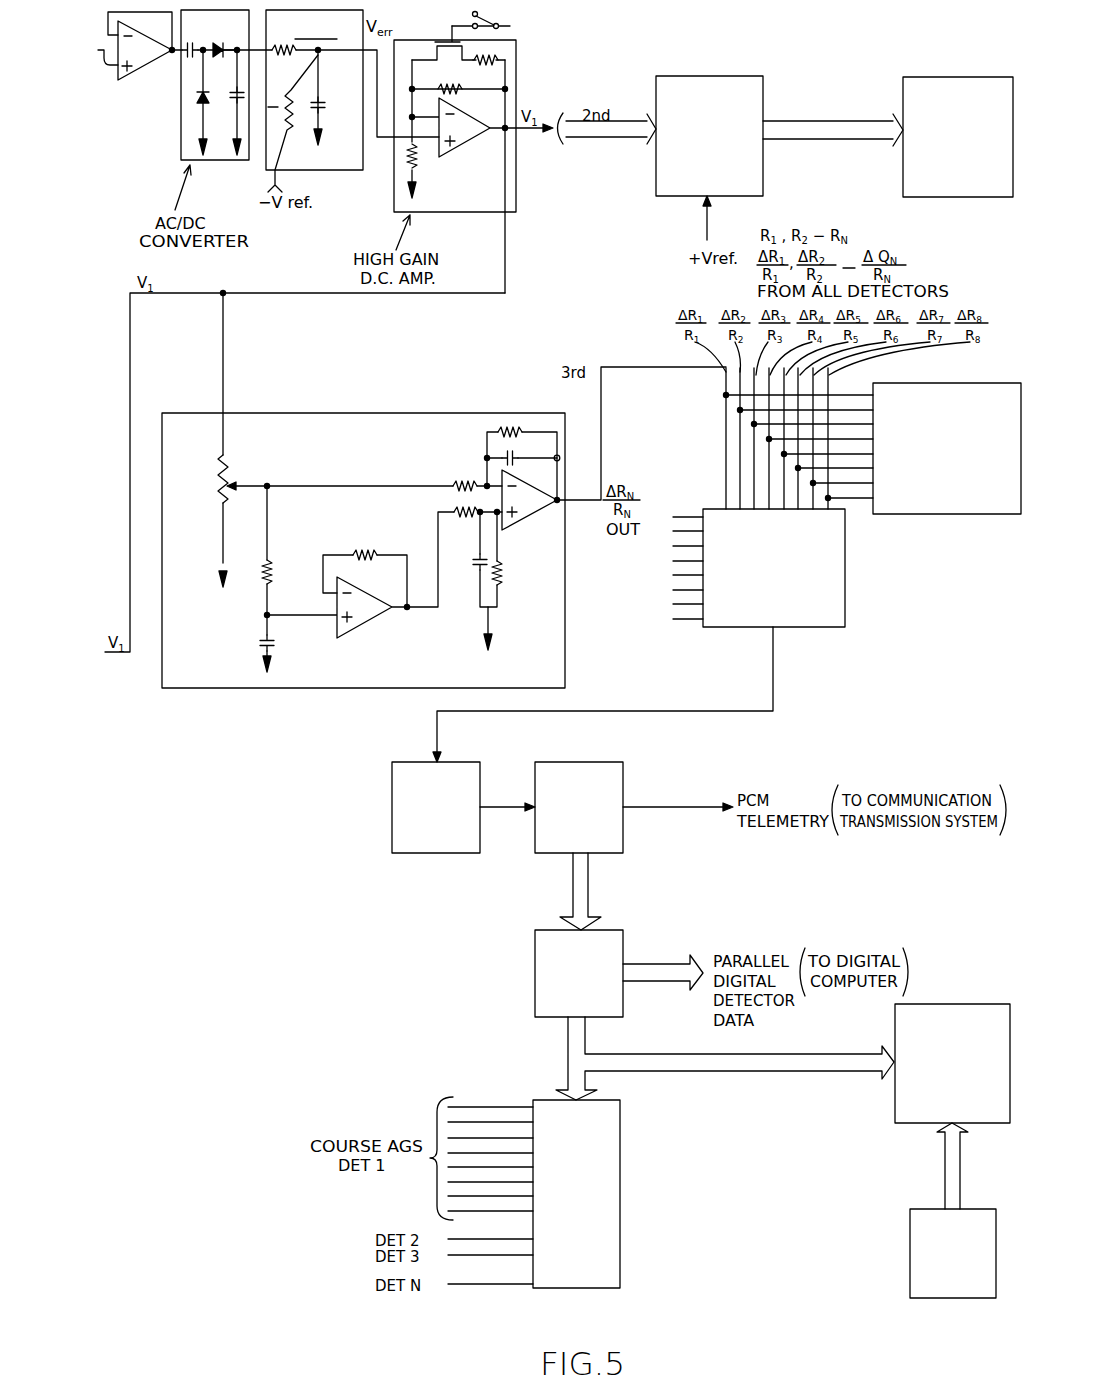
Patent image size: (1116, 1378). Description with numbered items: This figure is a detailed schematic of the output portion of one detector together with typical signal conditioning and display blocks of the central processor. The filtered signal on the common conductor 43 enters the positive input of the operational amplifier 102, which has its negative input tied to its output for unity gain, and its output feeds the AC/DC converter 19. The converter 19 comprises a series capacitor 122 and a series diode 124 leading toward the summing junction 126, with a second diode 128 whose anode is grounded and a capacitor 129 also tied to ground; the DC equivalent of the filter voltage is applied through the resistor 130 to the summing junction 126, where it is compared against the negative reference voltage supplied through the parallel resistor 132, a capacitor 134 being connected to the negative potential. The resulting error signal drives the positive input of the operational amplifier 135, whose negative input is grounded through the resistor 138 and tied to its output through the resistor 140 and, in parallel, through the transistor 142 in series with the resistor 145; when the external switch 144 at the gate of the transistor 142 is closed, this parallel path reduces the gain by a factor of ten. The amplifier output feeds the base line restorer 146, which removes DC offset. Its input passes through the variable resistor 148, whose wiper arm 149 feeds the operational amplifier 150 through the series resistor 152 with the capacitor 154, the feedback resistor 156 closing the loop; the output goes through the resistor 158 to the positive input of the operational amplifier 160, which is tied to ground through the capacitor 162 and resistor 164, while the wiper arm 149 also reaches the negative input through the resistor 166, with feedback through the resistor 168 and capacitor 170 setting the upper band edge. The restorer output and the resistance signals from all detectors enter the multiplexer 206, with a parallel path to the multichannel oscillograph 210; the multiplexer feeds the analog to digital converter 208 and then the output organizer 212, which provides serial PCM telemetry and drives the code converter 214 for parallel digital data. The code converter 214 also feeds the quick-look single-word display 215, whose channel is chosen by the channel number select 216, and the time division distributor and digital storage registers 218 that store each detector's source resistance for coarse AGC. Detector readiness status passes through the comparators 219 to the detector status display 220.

The AC/DC converter 19 is at (221, 100).
The common conductor 43 is at (106, 68).
The operational amplifier 102 is at (150, 72).
The series capacitor 122 is at (186, 45).
The series diode 124 is at (218, 44).
The summing junction 126 is at (319, 106).
The second diode 128 is at (212, 96).
The capacitor 129 is at (228, 98).
The resistor 130 is at (273, 55).
The parallel resistor 132 is at (283, 133).
The capacitor 134 is at (325, 95).
The operational amplifier 135 is at (456, 152).
The resistor 138 is at (494, 149).
The resistor 140 is at (458, 84).
The transistor 142 is at (444, 49).
The external switch 144 is at (488, 22).
The resistor 145 is at (493, 56).
The base line restorer 146 is at (382, 413).
The variable resistor 148 is at (225, 470).
The wiper arm 149 is at (240, 484).
The operational amplifier 150 is at (368, 622).
The series resistor 152 is at (270, 567).
The capacitor 154 is at (276, 643).
The resistor 156 is at (356, 552).
The resistor 158 is at (458, 516).
The operational amplifier 160 is at (520, 527).
The capacitor 162 is at (478, 566).
The resistor 164 is at (501, 573).
The resistor 166 is at (458, 482).
The resistor 168 is at (504, 428).
The capacitor 170 is at (500, 455).
The multiplexer 206 is at (845, 590).
The analog to digital converter 208 is at (446, 762).
The multichannel oscillograph 210 is at (945, 383).
The output organizer 212 is at (570, 762).
The code converter 214 is at (600, 930).
The quick-look single-word display 215 is at (895, 1107).
The channel number select 216 is at (910, 1238).
The time division distributor and digital storage registers 218 is at (620, 1160).
The comparators 219 is at (700, 76).
The detector status display 220 is at (940, 77).